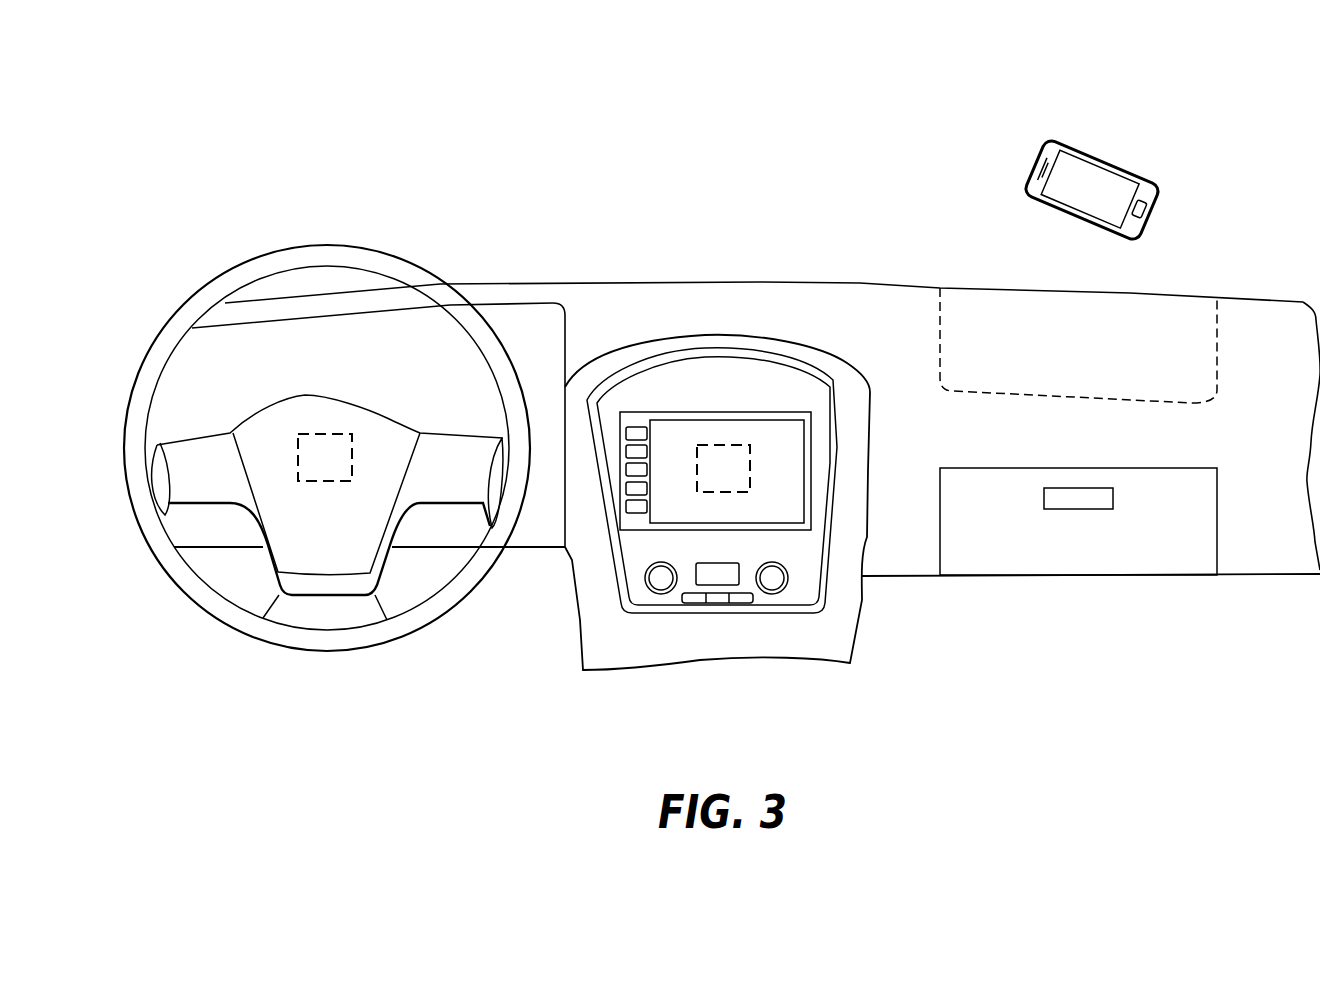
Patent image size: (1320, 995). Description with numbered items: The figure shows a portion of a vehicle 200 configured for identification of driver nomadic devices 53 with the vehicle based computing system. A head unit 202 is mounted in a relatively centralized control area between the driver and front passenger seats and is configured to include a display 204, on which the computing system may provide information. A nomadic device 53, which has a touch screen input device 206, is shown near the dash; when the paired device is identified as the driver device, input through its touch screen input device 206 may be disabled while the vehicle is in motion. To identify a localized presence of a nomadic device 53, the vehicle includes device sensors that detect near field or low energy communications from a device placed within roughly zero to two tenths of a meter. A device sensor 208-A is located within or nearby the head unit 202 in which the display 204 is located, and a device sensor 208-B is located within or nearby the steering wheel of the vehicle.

The vehicle dashboard environment 200 is at (290, 202).
The head unit 202 is at (690, 416).
The display 204 is at (675, 445).
The touch screen input device 206 is at (1094, 141).
The nomadic device 53 is at (1139, 209).
The device sensor 208-A is at (723, 445).
The device sensor 208-B is at (309, 434).